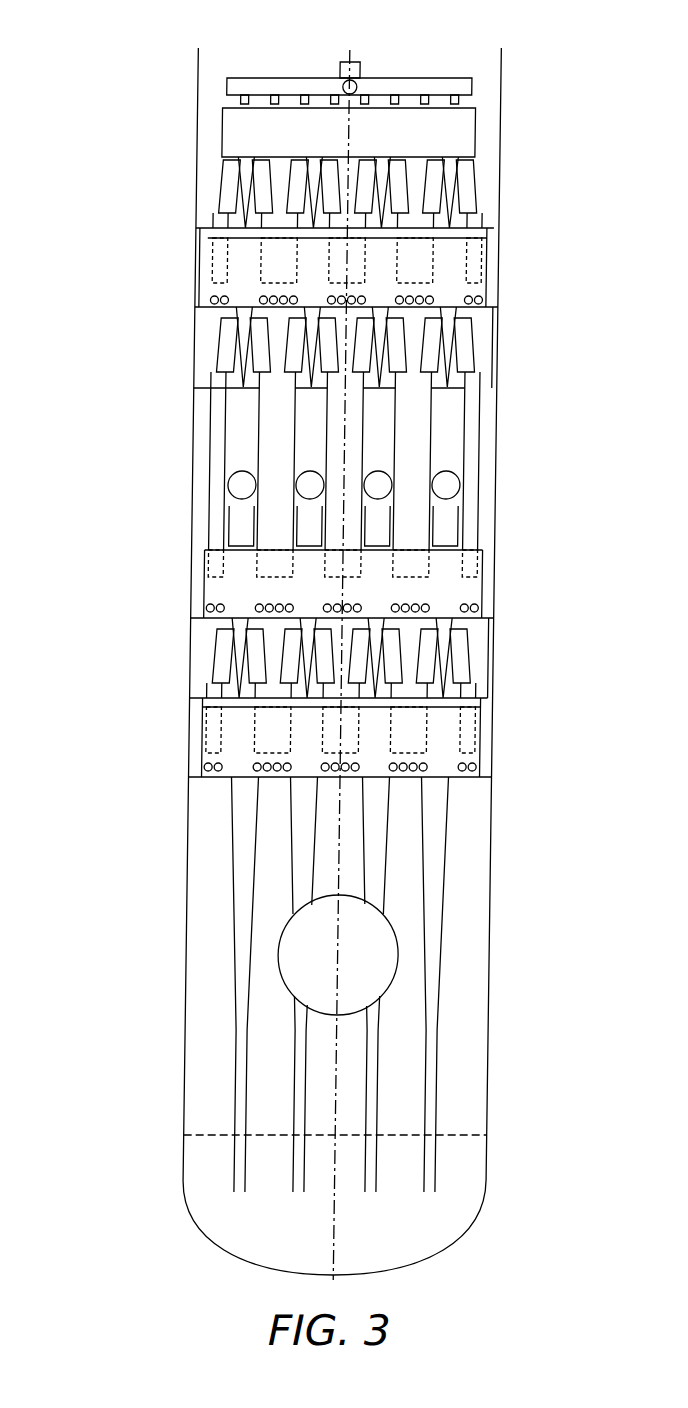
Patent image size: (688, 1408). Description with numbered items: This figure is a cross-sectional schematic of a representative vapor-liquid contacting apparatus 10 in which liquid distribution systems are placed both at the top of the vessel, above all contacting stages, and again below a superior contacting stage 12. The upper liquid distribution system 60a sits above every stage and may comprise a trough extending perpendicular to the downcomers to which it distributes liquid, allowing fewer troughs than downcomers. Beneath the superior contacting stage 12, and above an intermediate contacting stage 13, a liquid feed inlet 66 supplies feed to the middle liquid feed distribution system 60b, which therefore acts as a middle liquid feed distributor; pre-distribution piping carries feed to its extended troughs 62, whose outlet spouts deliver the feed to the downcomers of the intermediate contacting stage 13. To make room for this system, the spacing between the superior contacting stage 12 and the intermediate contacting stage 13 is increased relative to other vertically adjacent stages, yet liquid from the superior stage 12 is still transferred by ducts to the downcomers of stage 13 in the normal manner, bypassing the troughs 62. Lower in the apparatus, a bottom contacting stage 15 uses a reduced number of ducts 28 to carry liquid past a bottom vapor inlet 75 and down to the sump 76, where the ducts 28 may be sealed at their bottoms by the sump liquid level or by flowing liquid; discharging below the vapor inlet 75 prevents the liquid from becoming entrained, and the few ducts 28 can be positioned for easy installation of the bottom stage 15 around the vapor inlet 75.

The vapor-liquid contacting apparatus 10 is at (113, 50).
The superior contacting stage 12 is at (512, 342).
The intermediate contacting stage 13 is at (511, 582).
The bottom contacting stage 15 is at (513, 740).
The ducts 28 is at (246, 404).
The upper liquid distribution system 60a is at (479, 103).
The middle liquid feed distribution system 60b is at (513, 435).
The troughs 62 is at (434, 140).
The liquid feed inlet 66 is at (243, 487).
The bottom vapor inlet 75 is at (297, 975).
The sump 76 is at (482, 1206).